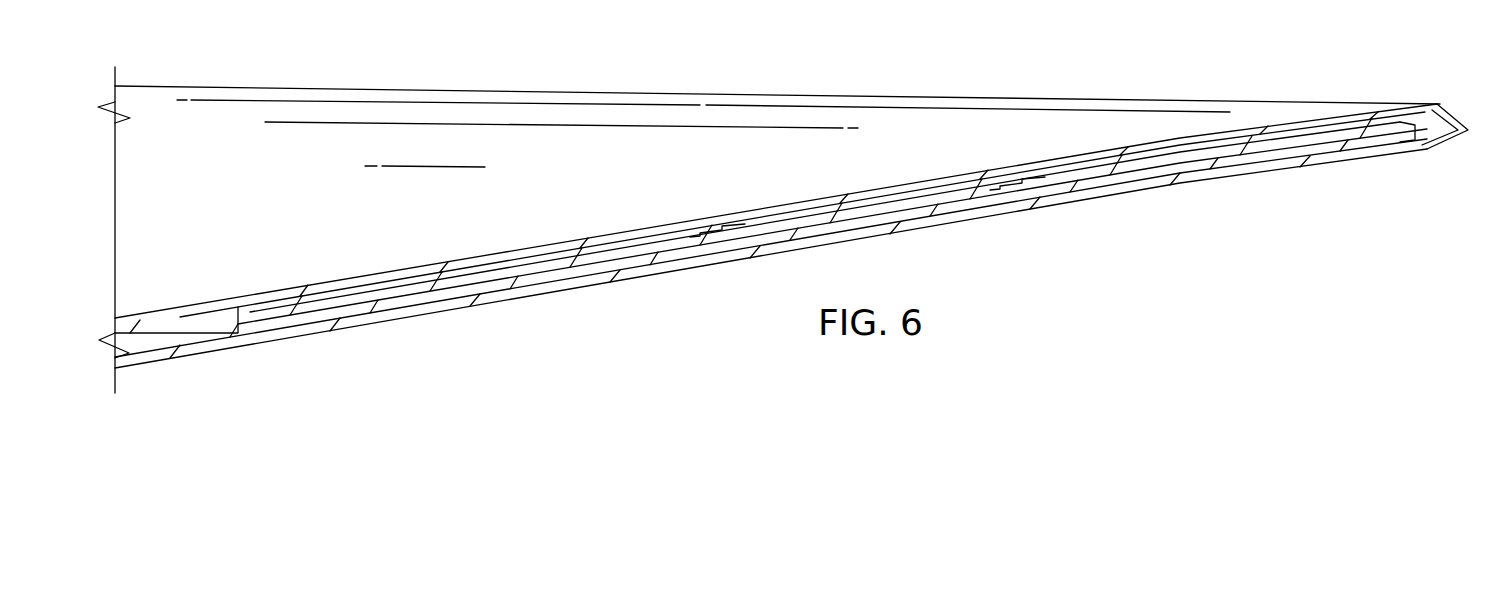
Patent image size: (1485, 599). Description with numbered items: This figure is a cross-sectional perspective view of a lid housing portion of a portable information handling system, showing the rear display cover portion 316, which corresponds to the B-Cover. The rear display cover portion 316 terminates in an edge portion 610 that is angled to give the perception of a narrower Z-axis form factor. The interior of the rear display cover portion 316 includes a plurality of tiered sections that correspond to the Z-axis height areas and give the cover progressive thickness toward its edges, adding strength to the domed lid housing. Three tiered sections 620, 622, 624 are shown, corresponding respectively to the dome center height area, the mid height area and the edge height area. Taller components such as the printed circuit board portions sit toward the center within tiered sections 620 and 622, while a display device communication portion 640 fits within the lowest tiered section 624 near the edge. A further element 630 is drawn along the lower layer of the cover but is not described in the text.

The rear display cover portion 316 is at (702, 116).
The edge portion 610 is at (1466, 125).
The tiered section 620 is at (204, 316).
The tiered section 622 is at (704, 229).
The tiered section 624 is at (1012, 180).
The lower panel 630 is at (308, 322).
The display device communication portion 640 is at (1257, 150).